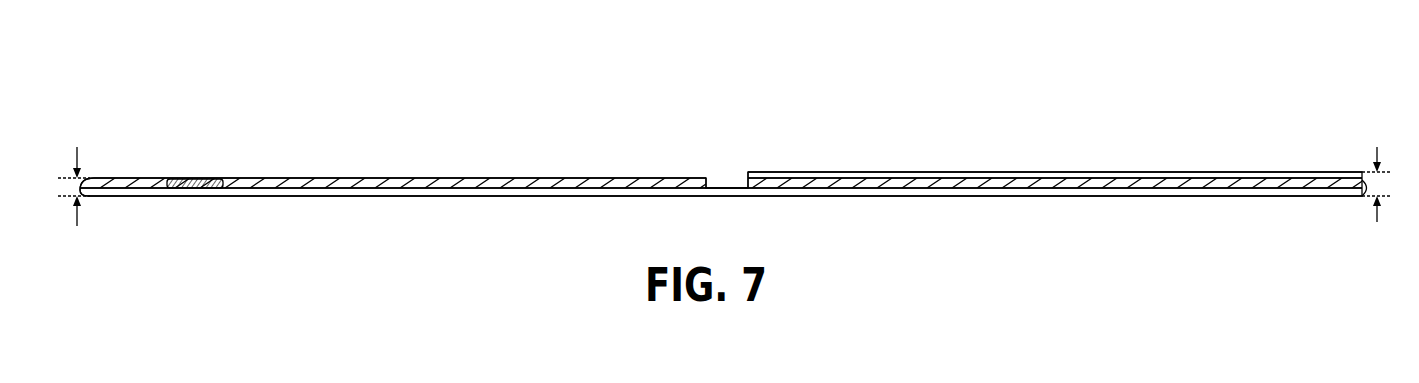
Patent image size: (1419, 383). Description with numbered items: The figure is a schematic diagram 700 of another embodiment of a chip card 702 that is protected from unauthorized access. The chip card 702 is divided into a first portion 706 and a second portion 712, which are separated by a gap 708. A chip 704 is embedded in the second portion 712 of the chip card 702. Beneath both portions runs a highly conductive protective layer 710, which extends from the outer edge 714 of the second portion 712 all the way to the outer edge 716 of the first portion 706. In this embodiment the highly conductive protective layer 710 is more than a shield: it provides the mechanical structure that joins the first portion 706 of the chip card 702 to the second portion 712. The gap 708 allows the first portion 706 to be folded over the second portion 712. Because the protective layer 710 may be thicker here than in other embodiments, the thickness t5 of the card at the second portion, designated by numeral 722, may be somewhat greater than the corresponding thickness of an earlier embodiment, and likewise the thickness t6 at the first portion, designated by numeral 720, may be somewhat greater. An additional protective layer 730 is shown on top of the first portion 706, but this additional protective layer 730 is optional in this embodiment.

The schematic diagram 700 is at (1278, 106).
The chip card 702 is at (1311, 148).
The chip 704 is at (200, 178).
The first portion 706 is at (1148, 186).
The gap 708 is at (735, 186).
The highly conductive protective layer 710 is at (848, 197).
The second portion 712 is at (548, 183).
The outer edge 714 is at (88, 198).
The outer edge 716 is at (1370, 197).
The thickness t6 720 is at (1400, 170).
The thickness t5 722 is at (52, 170).
The additional protective layer 730 is at (925, 174).